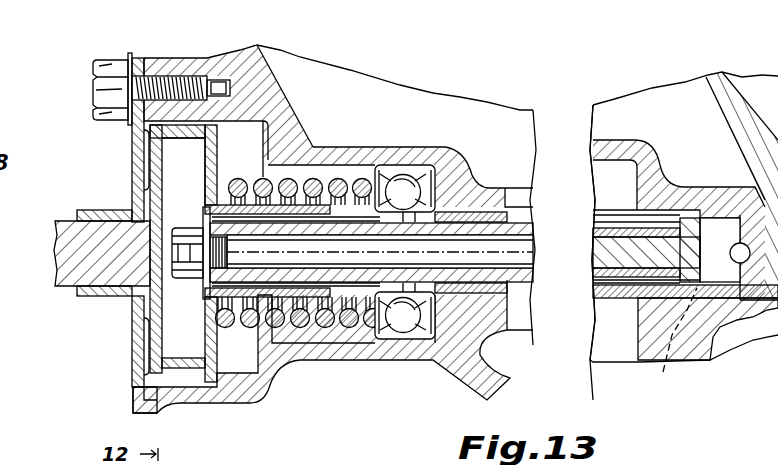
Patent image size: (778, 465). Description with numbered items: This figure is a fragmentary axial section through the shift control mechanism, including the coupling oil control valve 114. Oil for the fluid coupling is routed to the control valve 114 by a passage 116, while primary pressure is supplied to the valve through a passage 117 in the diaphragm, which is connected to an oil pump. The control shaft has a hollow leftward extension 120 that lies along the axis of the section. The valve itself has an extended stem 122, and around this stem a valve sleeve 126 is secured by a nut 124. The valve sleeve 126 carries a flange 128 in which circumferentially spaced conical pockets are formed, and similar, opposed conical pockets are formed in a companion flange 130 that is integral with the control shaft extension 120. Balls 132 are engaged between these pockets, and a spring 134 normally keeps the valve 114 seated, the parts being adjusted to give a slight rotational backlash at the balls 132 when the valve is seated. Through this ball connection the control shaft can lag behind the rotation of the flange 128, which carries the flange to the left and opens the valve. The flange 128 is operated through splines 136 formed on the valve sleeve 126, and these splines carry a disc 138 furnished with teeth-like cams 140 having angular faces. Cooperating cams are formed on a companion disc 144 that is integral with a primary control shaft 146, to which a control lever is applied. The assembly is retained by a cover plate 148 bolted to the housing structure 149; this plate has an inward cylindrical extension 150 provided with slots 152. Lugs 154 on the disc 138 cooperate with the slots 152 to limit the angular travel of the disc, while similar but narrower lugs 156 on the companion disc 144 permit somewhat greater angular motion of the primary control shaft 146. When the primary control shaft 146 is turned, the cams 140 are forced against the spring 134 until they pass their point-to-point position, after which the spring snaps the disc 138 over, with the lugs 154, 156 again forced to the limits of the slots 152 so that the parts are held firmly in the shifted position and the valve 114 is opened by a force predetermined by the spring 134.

The control valve 114 is at (725, 250).
The passage 116 is at (773, 181).
The passage 117 is at (707, 341).
The hollow leftward extension 120 is at (597, 210).
The extended stem 122 is at (300, 251).
The nut 124 is at (197, 280).
The valve sleeve 126 is at (207, 223).
The flange 128 is at (386, 176).
The companion flange 130 is at (421, 163).
The balls 132 is at (410, 333).
The spring 134 is at (325, 328).
The splines 136 is at (313, 180).
The disc 138 is at (210, 333).
The teeth-like cams 140 is at (190, 145).
The companion disc 144 is at (150, 163).
The primary control shaft 146 is at (62, 288).
The cover plate 148 is at (137, 345).
The housing structure 149 is at (152, 54).
The inward cylindrical extension 150 is at (280, 100).
The slots 152 is at (247, 377).
The lugs 154 is at (210, 383).
The lugs 156 is at (133, 392).